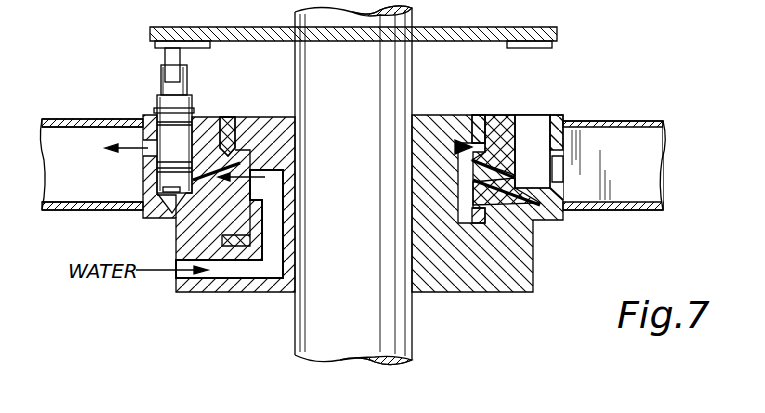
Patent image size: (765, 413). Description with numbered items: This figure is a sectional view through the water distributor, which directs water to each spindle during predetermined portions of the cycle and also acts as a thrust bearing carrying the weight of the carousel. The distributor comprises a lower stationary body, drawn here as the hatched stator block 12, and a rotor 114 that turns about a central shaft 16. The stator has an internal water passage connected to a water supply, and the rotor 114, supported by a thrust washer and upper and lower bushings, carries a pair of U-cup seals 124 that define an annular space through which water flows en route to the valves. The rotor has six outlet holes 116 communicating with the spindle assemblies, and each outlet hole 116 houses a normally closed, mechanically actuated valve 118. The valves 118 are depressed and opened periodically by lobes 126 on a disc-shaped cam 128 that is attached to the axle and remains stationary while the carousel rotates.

The housing 12 is at (468, 292).
The shaft 16 is at (356, 168).
The rotor 114 is at (543, 222).
The outlet hole 116 is at (519, 135).
The valve 118 is at (158, 103).
The U-cup seal 124 is at (248, 160).
The lobe 126 is at (157, 46).
The disc-shaped cam 128 is at (560, 33).